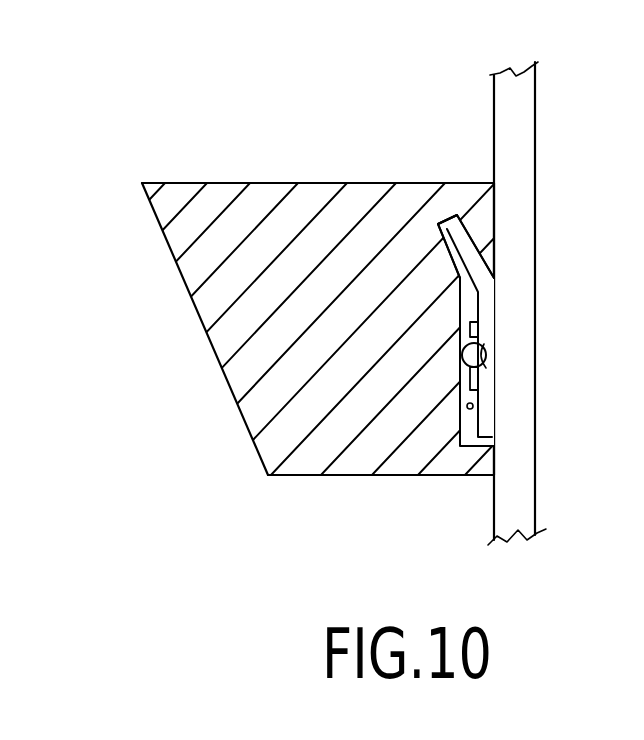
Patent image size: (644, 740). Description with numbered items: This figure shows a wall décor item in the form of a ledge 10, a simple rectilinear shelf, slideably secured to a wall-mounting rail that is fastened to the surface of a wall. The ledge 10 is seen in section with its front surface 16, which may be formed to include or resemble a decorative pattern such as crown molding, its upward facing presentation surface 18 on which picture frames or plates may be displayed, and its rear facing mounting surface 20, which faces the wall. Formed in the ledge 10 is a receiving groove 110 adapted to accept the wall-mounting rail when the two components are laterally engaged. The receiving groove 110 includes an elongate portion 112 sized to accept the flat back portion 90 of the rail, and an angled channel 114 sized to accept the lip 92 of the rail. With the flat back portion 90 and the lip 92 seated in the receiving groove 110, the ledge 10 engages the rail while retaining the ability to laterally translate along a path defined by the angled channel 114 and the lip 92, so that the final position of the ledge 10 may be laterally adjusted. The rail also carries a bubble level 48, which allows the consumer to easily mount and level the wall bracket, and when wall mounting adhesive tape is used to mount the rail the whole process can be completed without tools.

The ledge 10 is at (95, 128).
The front surface 16 is at (198, 316).
The presentation surface 18 is at (232, 182).
The rear facing mounting surface 20 is at (495, 222).
The bubble level 48 is at (482, 343).
The flat back portion 90 is at (487, 415).
The lip 92 is at (468, 245).
The receiving groove 110 is at (466, 405).
The elongate portion 112 is at (457, 420).
The angled channel 114 is at (445, 221).